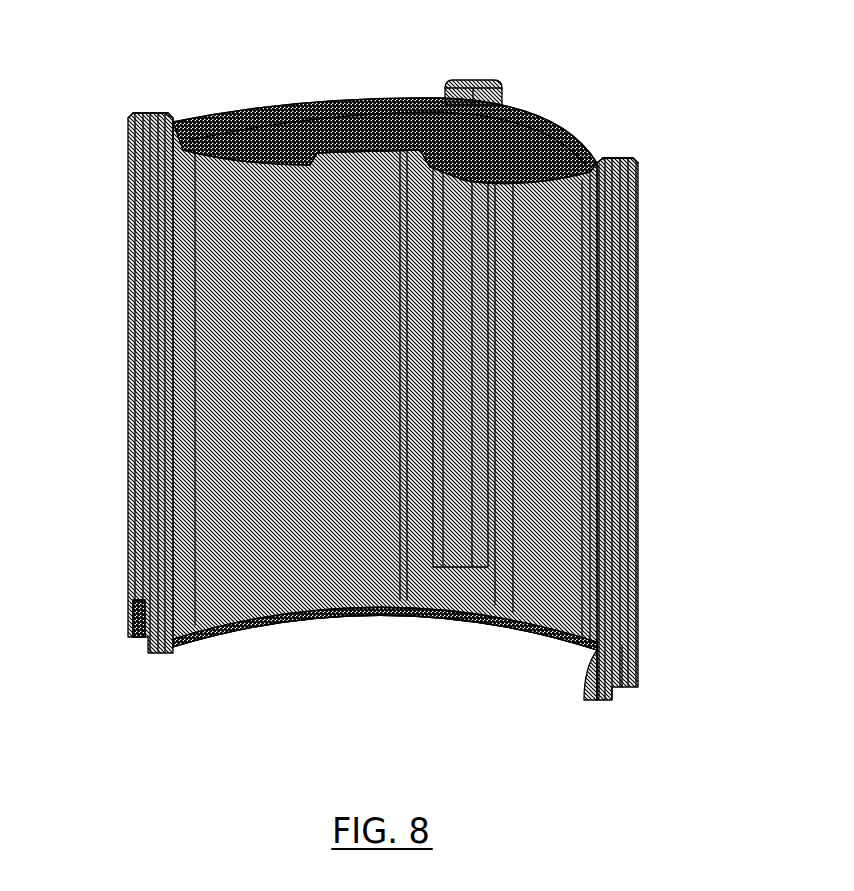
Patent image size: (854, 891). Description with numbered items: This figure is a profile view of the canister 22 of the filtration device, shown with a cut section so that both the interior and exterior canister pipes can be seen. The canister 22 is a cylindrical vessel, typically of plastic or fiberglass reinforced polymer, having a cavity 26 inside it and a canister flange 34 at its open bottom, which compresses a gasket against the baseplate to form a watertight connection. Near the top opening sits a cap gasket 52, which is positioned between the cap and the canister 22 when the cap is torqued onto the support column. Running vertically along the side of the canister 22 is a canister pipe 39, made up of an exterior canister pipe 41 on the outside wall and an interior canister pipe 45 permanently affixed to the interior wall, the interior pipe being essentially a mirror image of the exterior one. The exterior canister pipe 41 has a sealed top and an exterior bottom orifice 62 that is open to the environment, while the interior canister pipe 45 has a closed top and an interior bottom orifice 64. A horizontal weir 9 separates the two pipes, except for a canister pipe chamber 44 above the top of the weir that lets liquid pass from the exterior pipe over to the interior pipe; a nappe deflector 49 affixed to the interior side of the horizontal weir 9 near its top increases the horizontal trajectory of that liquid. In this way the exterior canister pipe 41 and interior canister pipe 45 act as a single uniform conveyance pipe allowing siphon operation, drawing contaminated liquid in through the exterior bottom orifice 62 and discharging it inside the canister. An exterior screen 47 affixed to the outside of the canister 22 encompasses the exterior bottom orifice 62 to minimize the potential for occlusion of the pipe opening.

The horizontal weir 9 is at (612, 155).
The canister 22 is at (486, 150).
The cavity 26 is at (320, 572).
The canister flange 34 is at (592, 708).
The canister pipe 39 is at (156, 95).
The exterior canister pipe 41 is at (623, 378).
The canister pipe chamber 44 is at (149, 124).
The interior canister pipe 45 is at (599, 378).
The exterior screen 47 is at (118, 497).
The nappe deflector 49 is at (177, 110).
The cap gasket 52 is at (352, 140).
The exterior bottom orifice 62 is at (624, 652).
The interior bottom orifice 64 is at (599, 652).